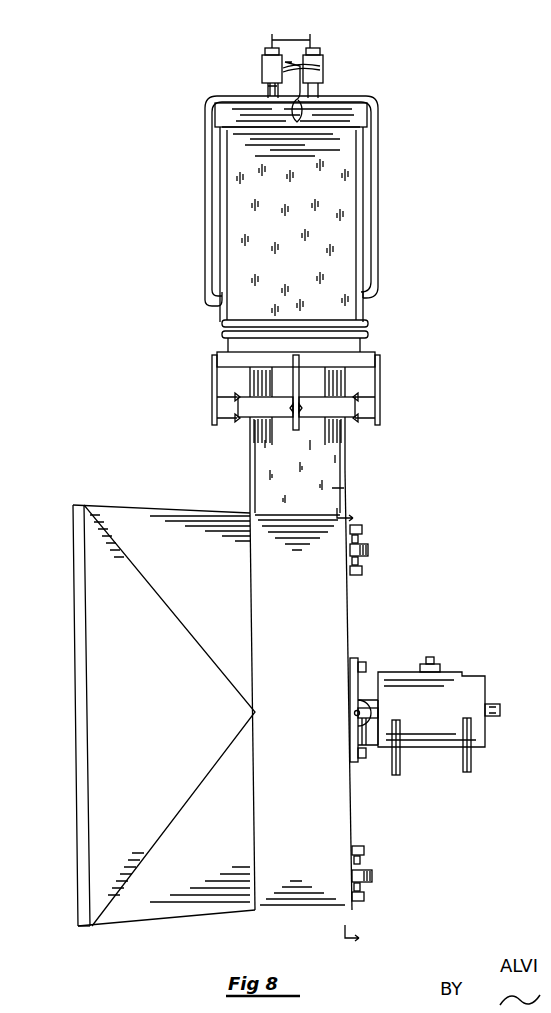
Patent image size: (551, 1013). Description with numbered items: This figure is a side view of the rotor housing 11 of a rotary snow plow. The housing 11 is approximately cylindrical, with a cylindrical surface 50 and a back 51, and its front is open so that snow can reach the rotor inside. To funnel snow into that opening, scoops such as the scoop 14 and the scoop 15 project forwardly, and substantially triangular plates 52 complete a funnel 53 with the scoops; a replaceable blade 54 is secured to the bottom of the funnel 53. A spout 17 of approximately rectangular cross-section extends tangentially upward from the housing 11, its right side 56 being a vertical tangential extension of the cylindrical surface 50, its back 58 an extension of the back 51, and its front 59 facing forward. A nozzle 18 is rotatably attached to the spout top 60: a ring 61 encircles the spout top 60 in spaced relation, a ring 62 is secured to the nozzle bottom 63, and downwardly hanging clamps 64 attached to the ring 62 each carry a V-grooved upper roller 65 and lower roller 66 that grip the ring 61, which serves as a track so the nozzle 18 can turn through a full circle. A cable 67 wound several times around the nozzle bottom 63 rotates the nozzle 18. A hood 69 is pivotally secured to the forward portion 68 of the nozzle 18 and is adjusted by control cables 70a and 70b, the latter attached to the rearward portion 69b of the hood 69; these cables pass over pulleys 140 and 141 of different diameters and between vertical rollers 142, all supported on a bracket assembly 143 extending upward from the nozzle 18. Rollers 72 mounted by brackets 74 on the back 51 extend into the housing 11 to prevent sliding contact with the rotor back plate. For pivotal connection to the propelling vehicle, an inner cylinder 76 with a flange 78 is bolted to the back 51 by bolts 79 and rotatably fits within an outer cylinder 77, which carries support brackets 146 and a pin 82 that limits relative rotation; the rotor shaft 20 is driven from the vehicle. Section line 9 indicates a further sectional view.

The section line 9- 9 is at (357, 727).
The rotor housing 11 is at (344, 516).
The scoop 14 is at (148, 528).
The scoop 15 is at (140, 912).
The spout 17 is at (250, 470).
The nozzle 18 is at (365, 228).
The rotor shaft 20 is at (497, 706).
The cylindrical surface 50 is at (292, 894).
The back 51 is at (354, 836).
The triangular plate 52 is at (80, 776).
The funnel 53 is at (105, 504).
The replaceable blade 54 is at (78, 926).
The right side 56 is at (333, 492).
The back 58 is at (352, 468).
The front 59 is at (250, 448).
The spout top 60 is at (348, 380).
The ring 61 is at (352, 420).
The ring 62 is at (219, 354).
The nozzle bottom 63 is at (370, 336).
The clamp 64 is at (381, 362).
The upper roller 65 is at (236, 400).
The lower roller 66 is at (382, 418).
The cable 67 is at (370, 323).
The forward portion 68 is at (222, 218).
The hood 69 is at (380, 110).
The rearward portion 69b is at (325, 128).
The control cable 70a is at (268, 90).
The control cable 70b is at (314, 92).
The roller 72 is at (370, 550).
The bracket 74 is at (364, 530).
The inner cylinder 76 is at (368, 750).
The outer cylinder 77 is at (410, 672).
The flange 78 is at (356, 660).
The bolt 79 is at (362, 668).
The pin 82 is at (433, 660).
The pulley 140 is at (262, 62).
The pulley 141 is at (322, 72).
The vertical roller 142 is at (265, 56).
The bracket assembly 143 is at (312, 40).
The support bracket 146 is at (465, 764).